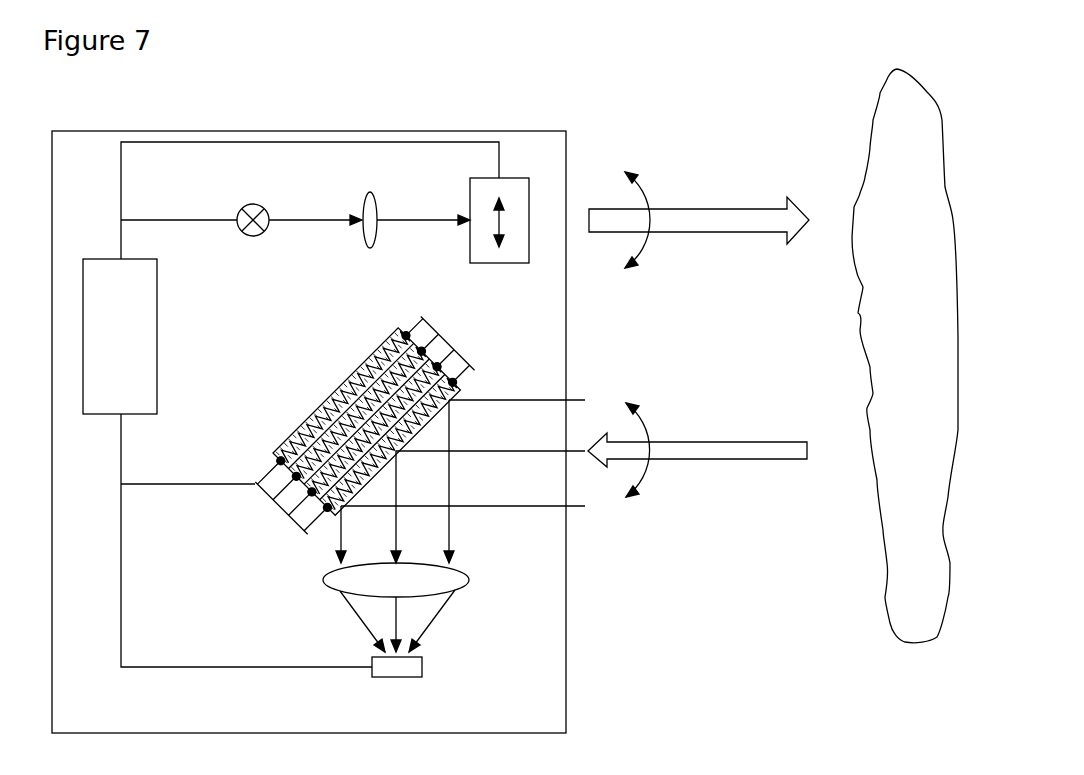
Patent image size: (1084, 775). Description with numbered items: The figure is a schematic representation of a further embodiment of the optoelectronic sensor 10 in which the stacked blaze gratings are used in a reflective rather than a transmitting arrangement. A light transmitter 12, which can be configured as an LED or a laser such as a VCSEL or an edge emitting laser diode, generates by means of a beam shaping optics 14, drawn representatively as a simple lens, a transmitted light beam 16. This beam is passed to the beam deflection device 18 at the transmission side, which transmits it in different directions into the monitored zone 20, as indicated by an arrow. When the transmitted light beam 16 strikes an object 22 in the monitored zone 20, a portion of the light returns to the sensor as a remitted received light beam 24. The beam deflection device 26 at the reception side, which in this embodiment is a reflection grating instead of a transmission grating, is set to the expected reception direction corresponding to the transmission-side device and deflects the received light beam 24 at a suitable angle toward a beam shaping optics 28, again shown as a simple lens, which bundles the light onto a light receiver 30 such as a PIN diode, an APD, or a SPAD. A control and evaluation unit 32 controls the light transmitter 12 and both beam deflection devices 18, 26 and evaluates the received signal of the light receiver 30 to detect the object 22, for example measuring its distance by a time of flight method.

The optoelectronic sensor 10 is at (537, 130).
The light transmitter 12 is at (250, 206).
The beam shaping optics 14 is at (370, 195).
The transmitted light beam 16 is at (678, 220).
The beam deflection device at the transmission side 18 is at (497, 255).
The monitored zone 20 is at (765, 160).
The object 22 is at (895, 120).
The received light beam 24 is at (685, 452).
The beam deflection device at the reception side 26 is at (357, 397).
The beam shaping optics 28 is at (350, 575).
The light receiver 30 is at (400, 662).
The control and evaluation unit 32 is at (112, 300).